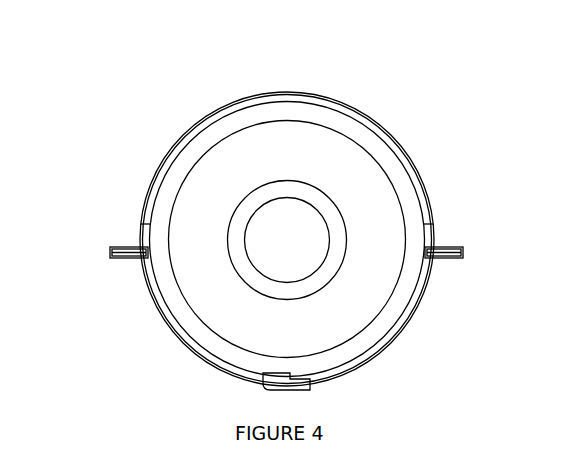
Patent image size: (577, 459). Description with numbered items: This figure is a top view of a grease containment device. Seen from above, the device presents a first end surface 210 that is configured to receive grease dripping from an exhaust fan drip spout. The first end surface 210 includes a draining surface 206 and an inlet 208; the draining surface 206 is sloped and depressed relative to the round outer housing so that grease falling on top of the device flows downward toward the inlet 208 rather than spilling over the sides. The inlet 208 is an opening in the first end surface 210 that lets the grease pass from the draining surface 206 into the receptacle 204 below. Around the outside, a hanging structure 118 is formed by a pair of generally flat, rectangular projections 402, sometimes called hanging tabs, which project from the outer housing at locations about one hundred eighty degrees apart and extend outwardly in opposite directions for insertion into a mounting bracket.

The receptacle 204 is at (434, 171).
The draining surface 206 is at (273, 151).
The inlet 208 is at (320, 190).
The first end surface 210 is at (198, 150).
The projection 402 is at (106, 237).
The hanging structure 118 is at (107, 268).